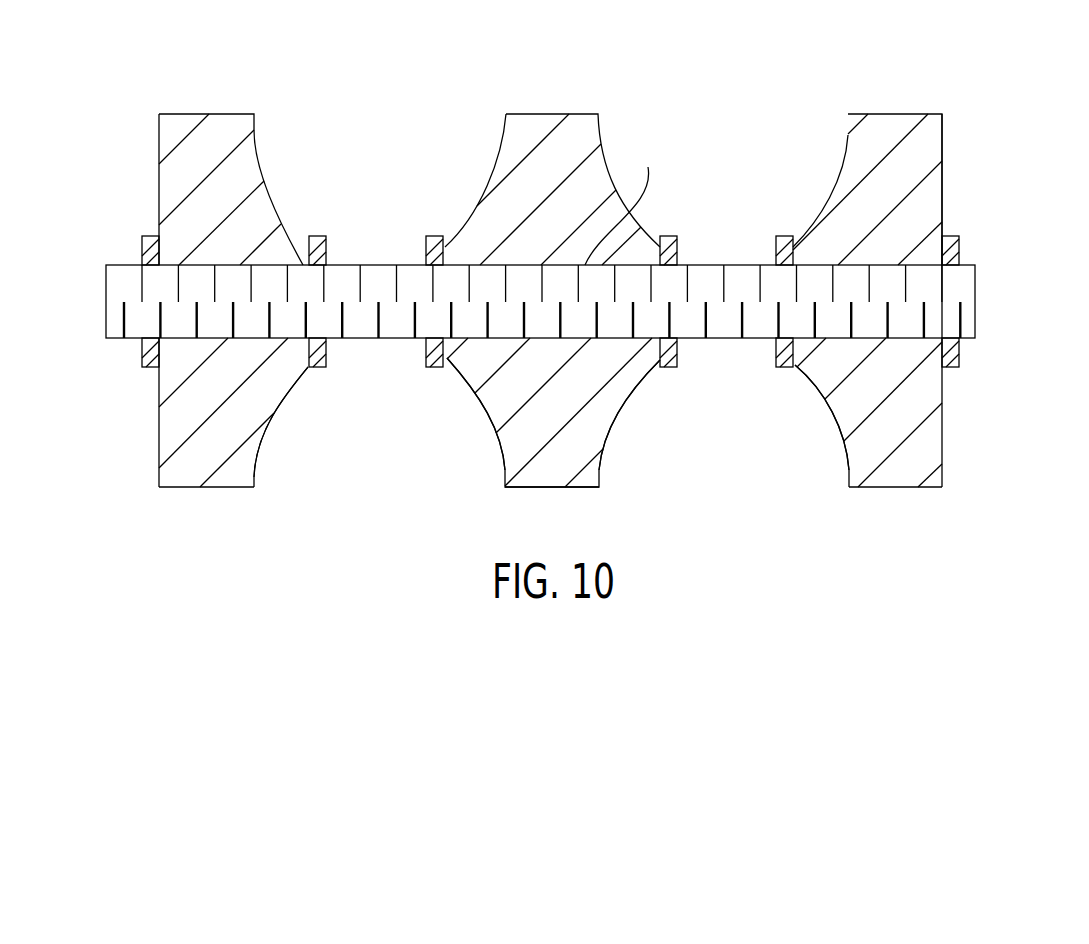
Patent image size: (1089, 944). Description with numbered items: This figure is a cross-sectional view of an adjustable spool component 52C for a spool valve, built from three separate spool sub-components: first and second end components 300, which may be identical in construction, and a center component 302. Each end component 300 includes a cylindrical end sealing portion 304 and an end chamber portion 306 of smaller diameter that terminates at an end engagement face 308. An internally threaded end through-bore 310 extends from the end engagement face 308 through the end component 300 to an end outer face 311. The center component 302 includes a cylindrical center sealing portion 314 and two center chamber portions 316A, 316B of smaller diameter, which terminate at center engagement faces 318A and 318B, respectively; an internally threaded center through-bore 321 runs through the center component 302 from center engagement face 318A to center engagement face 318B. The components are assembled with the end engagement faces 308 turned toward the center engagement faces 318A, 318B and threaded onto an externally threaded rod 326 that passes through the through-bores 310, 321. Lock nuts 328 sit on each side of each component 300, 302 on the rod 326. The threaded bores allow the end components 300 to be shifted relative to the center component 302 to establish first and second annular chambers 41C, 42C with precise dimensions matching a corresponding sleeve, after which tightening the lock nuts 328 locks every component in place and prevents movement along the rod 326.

The adjustable spool component 52C is at (849, 58).
The first annular chamber 41C is at (365, 486).
The second annular chamber 42C is at (740, 487).
The end component 300 is at (188, 460).
The center component 302 is at (587, 478).
The end sealing portion 304 is at (232, 490).
The end chamber portion 306 is at (262, 453).
The end engagement face 308 is at (310, 369).
The end through-bore 310 is at (190, 338).
The end outer face 311 is at (158, 185).
The center sealing portion 314 is at (538, 490).
The first center chamber portion 316A is at (500, 446).
The second center chamber portion 316B is at (617, 413).
The first center engagement face 318A is at (447, 360).
The second center engagement face 318B is at (663, 367).
The center through-bore 321 is at (625, 202).
The externally threaded rod 326 is at (962, 282).
The lock nut 328 is at (142, 250).